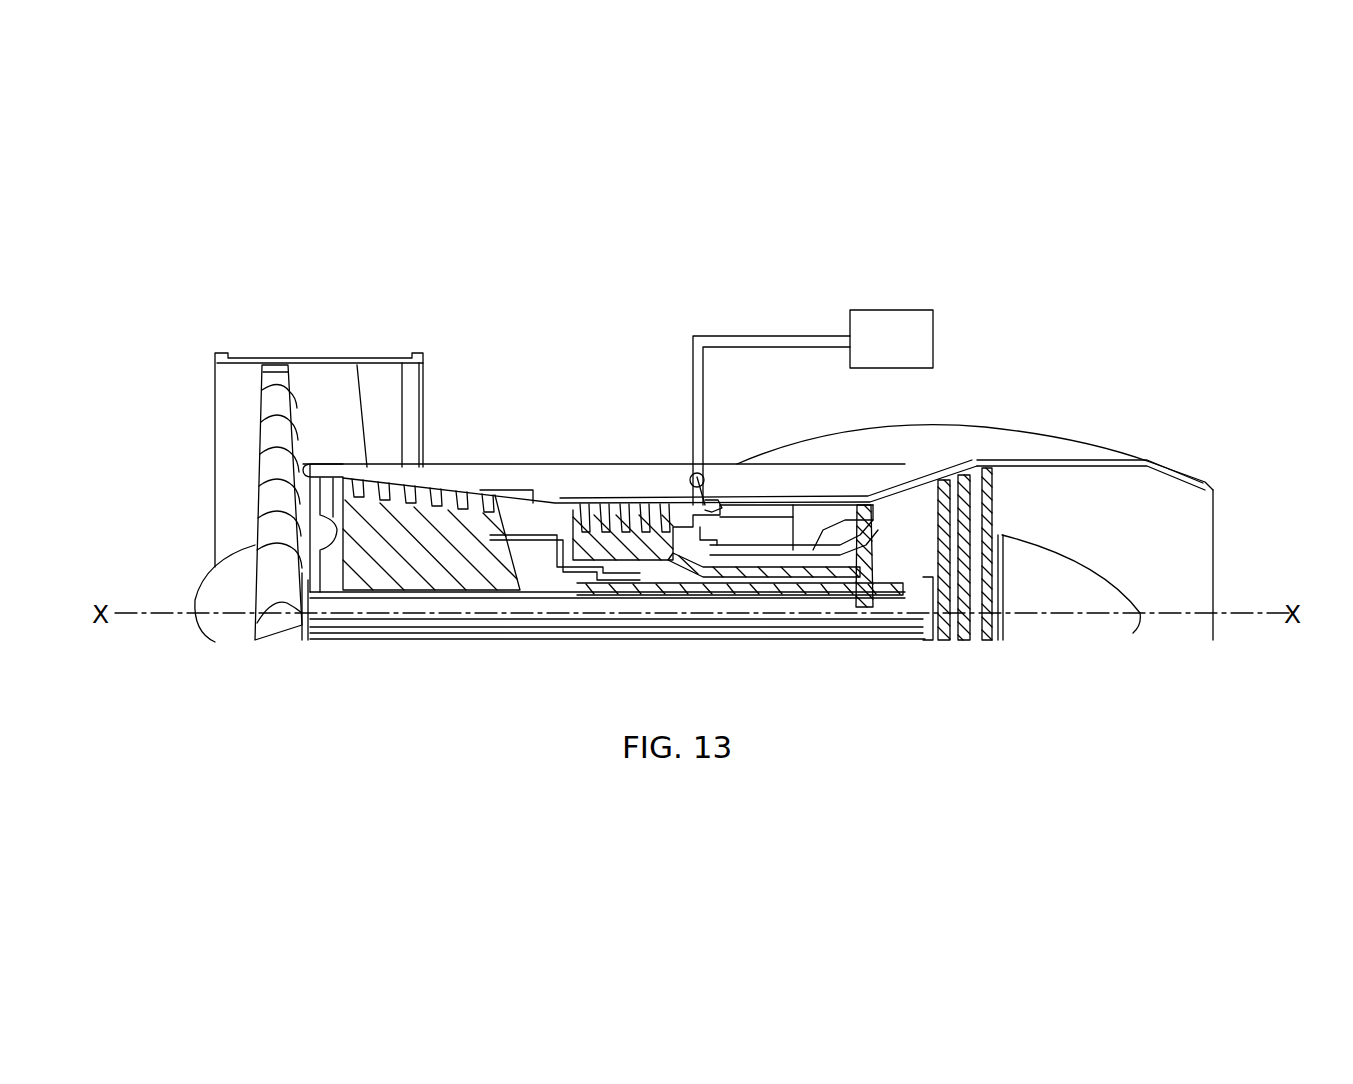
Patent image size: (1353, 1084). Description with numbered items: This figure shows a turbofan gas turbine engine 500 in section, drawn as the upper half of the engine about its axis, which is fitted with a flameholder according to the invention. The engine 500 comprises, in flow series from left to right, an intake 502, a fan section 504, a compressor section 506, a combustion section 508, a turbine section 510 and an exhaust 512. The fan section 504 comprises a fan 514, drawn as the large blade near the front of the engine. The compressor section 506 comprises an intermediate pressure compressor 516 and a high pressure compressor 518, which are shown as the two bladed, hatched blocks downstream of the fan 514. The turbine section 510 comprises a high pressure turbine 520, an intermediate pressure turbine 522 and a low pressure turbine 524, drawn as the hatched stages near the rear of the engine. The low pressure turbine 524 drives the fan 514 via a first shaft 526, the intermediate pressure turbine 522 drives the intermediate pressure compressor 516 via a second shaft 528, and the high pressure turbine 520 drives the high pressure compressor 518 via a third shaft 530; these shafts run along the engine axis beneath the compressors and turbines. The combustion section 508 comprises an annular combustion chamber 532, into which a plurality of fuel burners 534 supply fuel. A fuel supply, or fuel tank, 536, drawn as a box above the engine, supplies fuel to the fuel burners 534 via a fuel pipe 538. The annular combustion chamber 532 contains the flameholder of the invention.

The turbofan gas turbine engine 500 is at (575, 438).
The intake 502 is at (198, 459).
The fan section 504 is at (403, 322).
The compressor section 506 is at (505, 456).
The combustion section 508 is at (755, 490).
The turbine section 510 is at (937, 412).
The exhaust 512 is at (1197, 562).
The fan 514 is at (273, 392).
The intermediate pressure compressor 516 is at (418, 530).
The high pressure compressor 518 is at (625, 505).
The high pressure turbine 520 is at (862, 500).
The intermediate pressure turbine 522 is at (962, 510).
The low pressure turbine 524 is at (985, 505).
The first shaft 526 is at (495, 640).
The second shaft 528 is at (578, 585).
The third shaft 530 is at (838, 575).
The annular combustion chamber 532 is at (779, 542).
The fuel burners 534 is at (726, 503).
The fuel supply 536 is at (895, 310).
The fuel pipe 538 is at (690, 352).